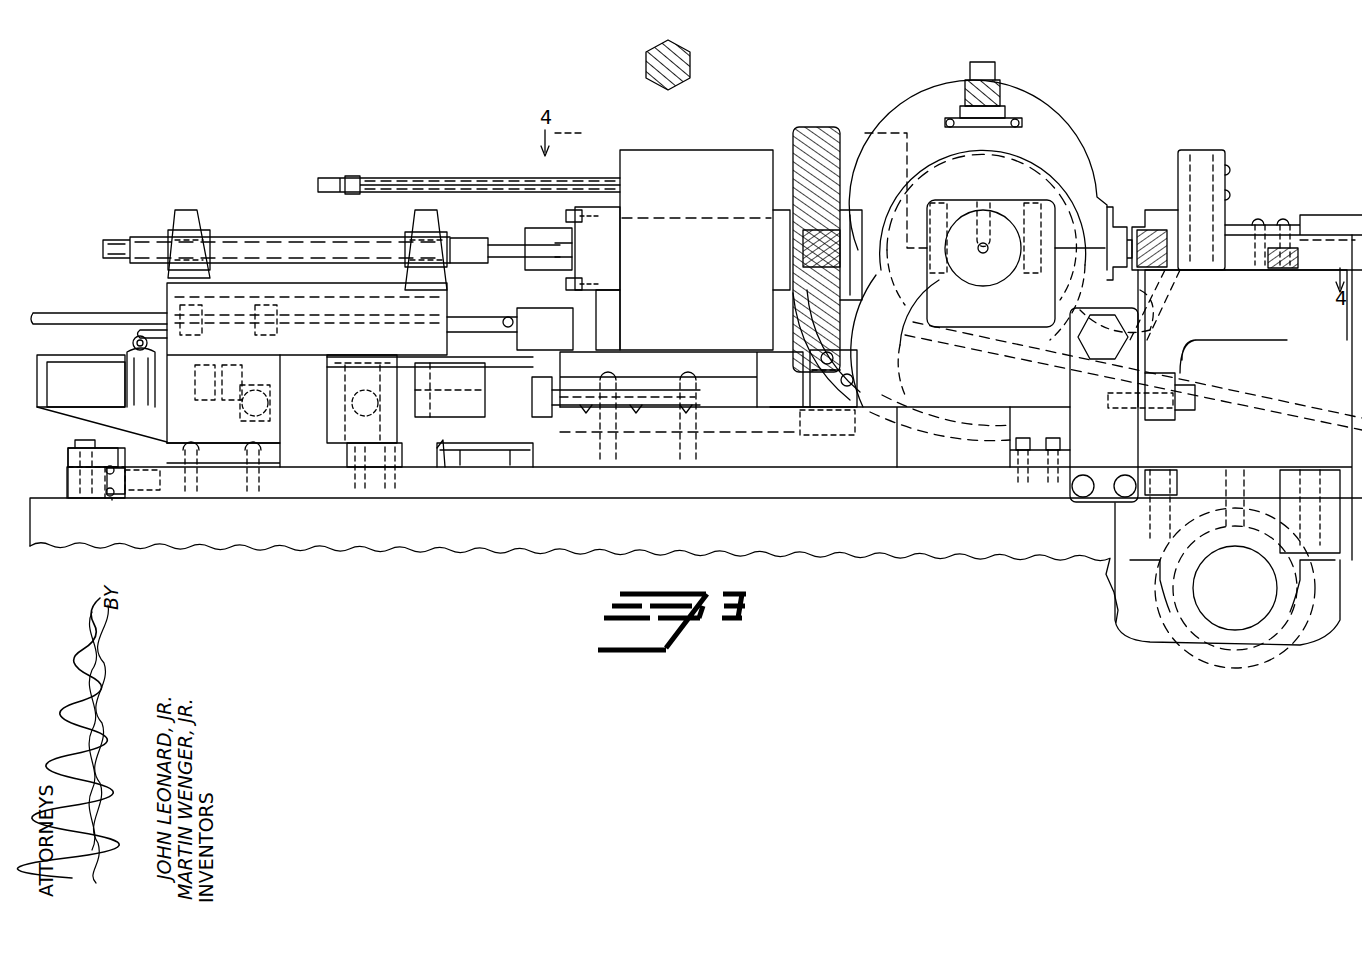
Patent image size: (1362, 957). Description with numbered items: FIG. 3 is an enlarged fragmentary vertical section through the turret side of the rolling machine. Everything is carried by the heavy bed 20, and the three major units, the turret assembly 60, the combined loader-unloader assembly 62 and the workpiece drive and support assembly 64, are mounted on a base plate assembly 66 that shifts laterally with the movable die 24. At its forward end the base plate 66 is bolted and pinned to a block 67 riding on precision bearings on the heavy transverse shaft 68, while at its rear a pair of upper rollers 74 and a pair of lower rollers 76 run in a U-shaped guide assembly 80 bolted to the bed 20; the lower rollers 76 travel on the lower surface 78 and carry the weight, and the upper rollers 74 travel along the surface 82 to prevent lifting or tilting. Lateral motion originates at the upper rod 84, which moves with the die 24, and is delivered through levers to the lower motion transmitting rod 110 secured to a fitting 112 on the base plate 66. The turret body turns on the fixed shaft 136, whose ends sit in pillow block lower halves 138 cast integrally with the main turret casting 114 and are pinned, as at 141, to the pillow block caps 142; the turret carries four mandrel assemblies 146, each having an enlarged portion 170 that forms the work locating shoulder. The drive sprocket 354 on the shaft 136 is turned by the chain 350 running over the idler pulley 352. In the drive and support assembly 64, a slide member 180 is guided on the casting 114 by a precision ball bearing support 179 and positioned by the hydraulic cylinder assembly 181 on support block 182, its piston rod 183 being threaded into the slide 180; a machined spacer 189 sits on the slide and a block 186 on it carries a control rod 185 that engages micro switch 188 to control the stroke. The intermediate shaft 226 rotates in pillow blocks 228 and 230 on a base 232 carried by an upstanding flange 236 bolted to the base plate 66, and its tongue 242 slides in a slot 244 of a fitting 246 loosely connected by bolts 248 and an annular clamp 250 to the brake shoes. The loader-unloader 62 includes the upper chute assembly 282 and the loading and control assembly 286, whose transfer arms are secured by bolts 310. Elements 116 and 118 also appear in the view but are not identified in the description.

The bed 20 is at (683, 534).
The base plate assembly 66 is at (688, 492).
The U-shaped guide assembly 80 is at (68, 478).
The upper rollers 74 is at (114, 464).
The surface 82 is at (115, 454).
The lower rollers 76 is at (116, 496).
The lower surface 78 is at (109, 500).
The micro switch 188 is at (98, 343).
The base 232 is at (258, 292).
The support flange 236 is at (280, 452).
The pillow block 228 is at (187, 212).
The intermediate shaft 226 is at (335, 240).
The pillow block 230 is at (420, 214).
The tongue 242 is at (480, 224).
The fitting 246 is at (530, 242).
The slot 244 is at (540, 262).
The bolts 248 is at (575, 214).
The annular clamp 250 is at (612, 204).
The workpiece drive and support assembly 64 is at (658, 140).
The spacer 189 is at (626, 351).
The block 186 is at (543, 310).
The control rod 185 is at (470, 327).
The hydraulic cylinder assembly 181 is at (327, 358).
The support block 182 is at (490, 355).
The piston rod 183 is at (520, 390).
The block 118 is at (400, 470).
The slide member 180 is at (666, 378).
The precision ball bearing support 179 is at (681, 409).
The die 24 is at (822, 135).
The enlarged portion 170 is at (830, 230).
The main turret casting 114 is at (905, 355).
The turret assembly 60 is at (1062, 133).
The drive sprocket 354 is at (1050, 172).
The mandrel assemblies 146 is at (1013, 107).
The pillow block lower halves 138 is at (1045, 250).
The fixed shaft 136 is at (990, 210).
The pin 141 is at (983, 205).
The pillow block caps 142 is at (950, 192).
The fitting 112 is at (1070, 390).
The lower motion transmitting rod 110 is at (1084, 340).
The bolts 116 is at (1060, 450).
The loader-unloader assembly 62 is at (1173, 193).
The upper chute assembly 282 is at (1228, 187).
The loading and control assembly 286 is at (1247, 226).
The bolts 310 is at (1276, 224).
The idler pulley 352 is at (1160, 327).
The chain 350 is at (1271, 378).
The block 67 is at (1118, 588).
The shaft 68 is at (1243, 548).
The upper rod 84 is at (688, 60).